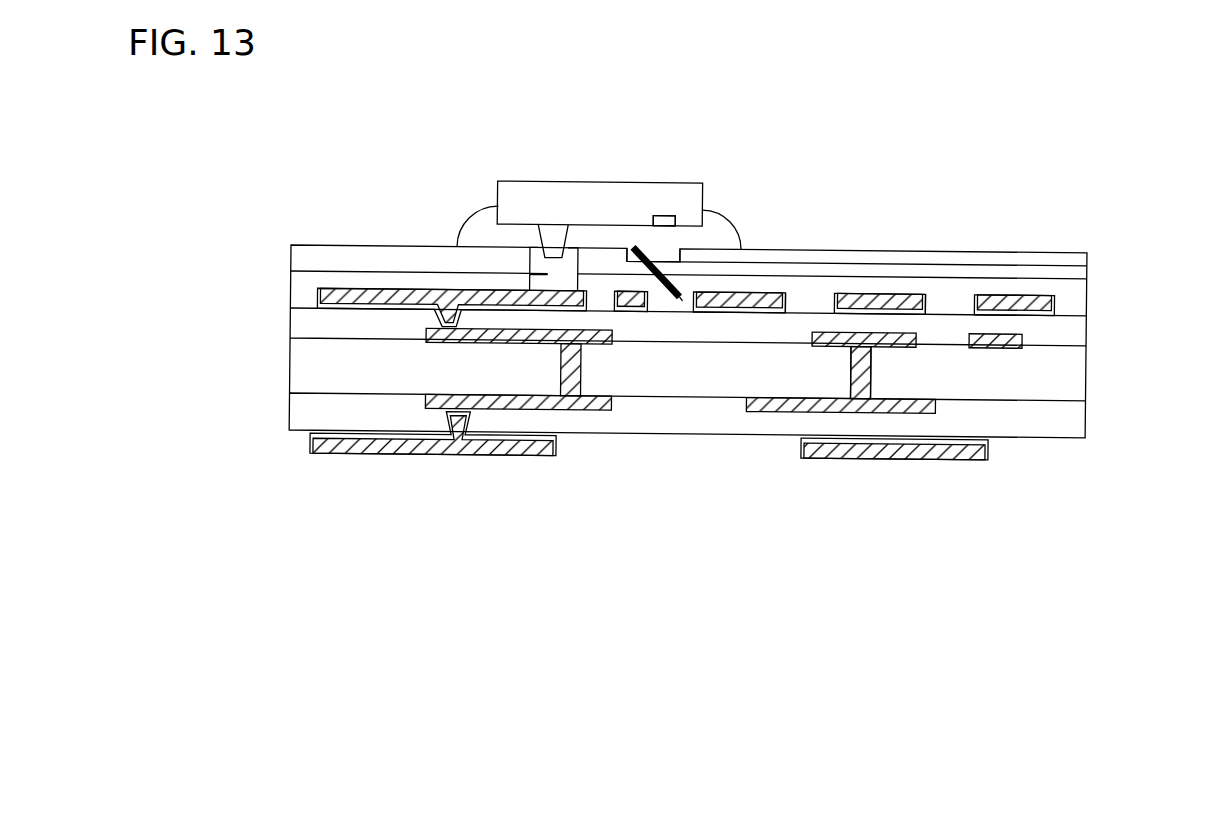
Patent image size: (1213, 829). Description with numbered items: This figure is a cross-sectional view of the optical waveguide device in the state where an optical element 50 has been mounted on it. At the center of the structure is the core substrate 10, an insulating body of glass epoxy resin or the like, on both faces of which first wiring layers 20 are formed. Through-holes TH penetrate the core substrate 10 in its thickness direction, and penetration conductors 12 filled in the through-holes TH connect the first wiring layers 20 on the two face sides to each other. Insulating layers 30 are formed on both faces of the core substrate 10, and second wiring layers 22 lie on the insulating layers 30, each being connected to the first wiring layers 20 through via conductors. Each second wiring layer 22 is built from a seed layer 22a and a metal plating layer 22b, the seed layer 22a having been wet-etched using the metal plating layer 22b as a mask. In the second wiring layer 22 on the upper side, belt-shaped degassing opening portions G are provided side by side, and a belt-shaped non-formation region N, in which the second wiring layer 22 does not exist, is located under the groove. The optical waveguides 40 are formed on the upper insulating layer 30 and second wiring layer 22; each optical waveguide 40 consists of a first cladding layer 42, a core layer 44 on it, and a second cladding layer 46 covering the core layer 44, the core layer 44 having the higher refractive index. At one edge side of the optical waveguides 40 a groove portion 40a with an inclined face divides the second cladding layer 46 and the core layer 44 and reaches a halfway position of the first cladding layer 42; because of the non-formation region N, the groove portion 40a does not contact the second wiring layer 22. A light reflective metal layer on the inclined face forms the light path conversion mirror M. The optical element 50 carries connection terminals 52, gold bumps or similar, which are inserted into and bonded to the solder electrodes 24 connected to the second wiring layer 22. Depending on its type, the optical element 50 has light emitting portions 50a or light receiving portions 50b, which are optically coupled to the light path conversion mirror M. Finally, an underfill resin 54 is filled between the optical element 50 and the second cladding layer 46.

The core substrate 10 is at (1078, 371).
The penetration conductor 12 is at (860, 357).
The first wiring layer 20 is at (1058, 298).
The second wiring layer 22 is at (630, 328).
The seed layer 22a is at (322, 303).
The metal plating layer 22b is at (335, 293).
The solder electrode 24 is at (528, 274).
The insulating layer 30 is at (1078, 322).
The optical waveguide 40 is at (746, 260).
The groove portion 40a is at (694, 254).
The first cladding layer 42 is at (1073, 282).
The core layer 44 is at (1073, 264).
The second cladding layer 46 is at (1088, 245).
The optical element 50 is at (650, 178).
The light emitting portion 50a is at (661, 210).
The light receiving portion 50b is at (664, 221).
The connection terminal 52 is at (547, 228).
The underfill resin 54 is at (472, 214).
The light path conversion mirror M is at (662, 258).
The non-formation region N is at (684, 296).
The degassing opening portion G is at (787, 303).
The through-hole TH is at (873, 367).